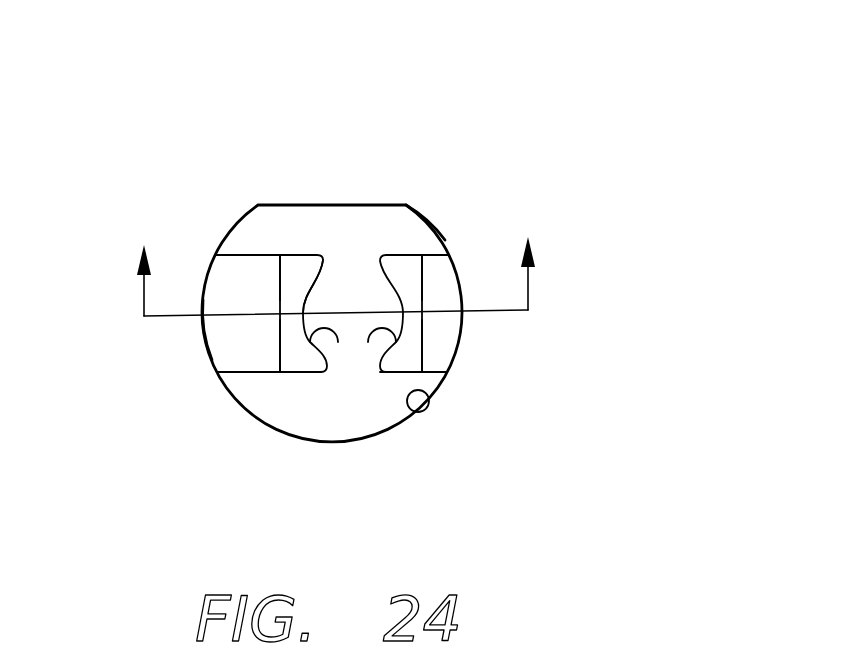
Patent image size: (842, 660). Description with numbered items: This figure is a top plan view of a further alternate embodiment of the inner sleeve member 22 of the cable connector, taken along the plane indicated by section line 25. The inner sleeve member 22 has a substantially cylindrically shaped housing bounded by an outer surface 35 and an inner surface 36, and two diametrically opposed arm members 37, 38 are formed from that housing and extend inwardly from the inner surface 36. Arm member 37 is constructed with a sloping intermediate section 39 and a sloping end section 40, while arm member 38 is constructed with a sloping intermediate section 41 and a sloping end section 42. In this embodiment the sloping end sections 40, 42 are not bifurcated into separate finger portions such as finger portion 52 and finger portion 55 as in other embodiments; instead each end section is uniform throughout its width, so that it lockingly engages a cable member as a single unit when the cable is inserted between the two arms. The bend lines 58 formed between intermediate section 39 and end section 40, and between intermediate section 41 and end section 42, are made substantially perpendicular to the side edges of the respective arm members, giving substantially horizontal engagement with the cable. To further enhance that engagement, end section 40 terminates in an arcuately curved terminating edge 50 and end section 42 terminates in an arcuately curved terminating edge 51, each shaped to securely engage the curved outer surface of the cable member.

The inner sleeve member 22 is at (309, 178).
The section line 25- 25 is at (334, 273).
The outer surface 35 is at (425, 222).
The inner surface 36 is at (432, 397).
The arm member 37 is at (435, 272).
The arm member 38 is at (232, 332).
The intermediate section 39 is at (438, 332).
The end section 40 is at (402, 268).
The intermediate section 41 is at (252, 357).
The end section 42 is at (295, 272).
The arcuately curved terminating edge 50 is at (368, 342).
The arcuately curved terminating edge 51 is at (338, 342).
The finger portion 52 is at (345, 228).
The finger portion 55 is at (262, 267).
The bend line 58 is at (425, 355).